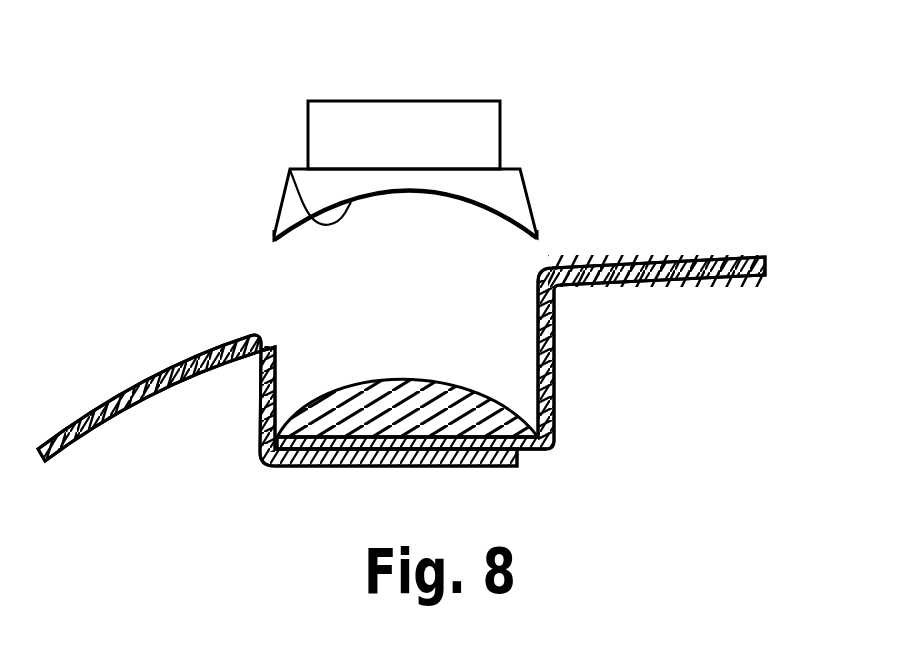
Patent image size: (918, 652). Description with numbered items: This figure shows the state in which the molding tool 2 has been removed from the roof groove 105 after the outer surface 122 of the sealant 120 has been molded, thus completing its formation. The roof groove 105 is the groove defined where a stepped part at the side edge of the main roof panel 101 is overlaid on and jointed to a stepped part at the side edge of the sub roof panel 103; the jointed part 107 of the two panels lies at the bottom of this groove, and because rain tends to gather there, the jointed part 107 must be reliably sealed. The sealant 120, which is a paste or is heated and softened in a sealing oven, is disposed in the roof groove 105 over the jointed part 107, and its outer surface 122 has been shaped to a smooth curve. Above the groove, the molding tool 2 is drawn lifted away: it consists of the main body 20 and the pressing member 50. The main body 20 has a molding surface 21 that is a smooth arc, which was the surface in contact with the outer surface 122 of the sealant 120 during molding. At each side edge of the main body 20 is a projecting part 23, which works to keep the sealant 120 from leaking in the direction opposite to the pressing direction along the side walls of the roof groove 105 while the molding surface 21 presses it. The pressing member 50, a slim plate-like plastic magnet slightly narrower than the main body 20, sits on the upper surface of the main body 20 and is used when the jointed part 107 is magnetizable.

The molding tool 2 is at (374, 68).
The pressing member 50 is at (438, 125).
The main body 20 is at (515, 183).
The molding surface 21 is at (290, 170).
The projecting part 23 is at (539, 229).
The main roof panel 101 is at (702, 257).
The sub roof panel 103 is at (137, 390).
The roof groove 105 is at (394, 351).
The jointed part 107 is at (424, 443).
The sealant 120 is at (473, 417).
The outer surface 122 is at (328, 392).